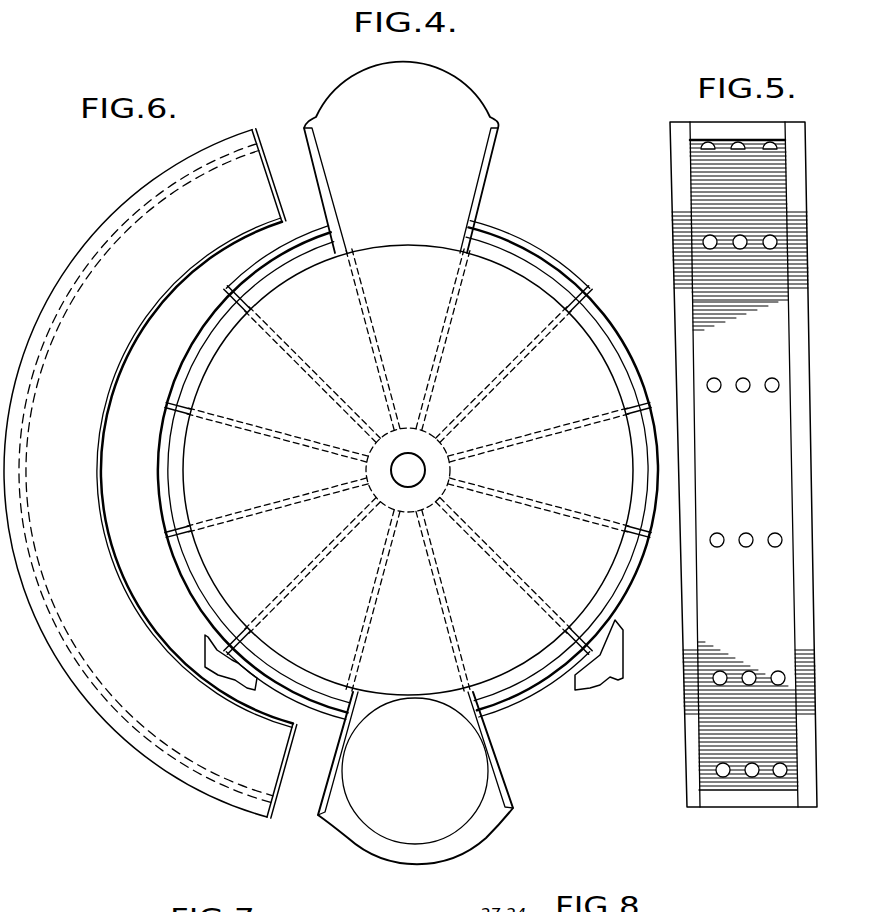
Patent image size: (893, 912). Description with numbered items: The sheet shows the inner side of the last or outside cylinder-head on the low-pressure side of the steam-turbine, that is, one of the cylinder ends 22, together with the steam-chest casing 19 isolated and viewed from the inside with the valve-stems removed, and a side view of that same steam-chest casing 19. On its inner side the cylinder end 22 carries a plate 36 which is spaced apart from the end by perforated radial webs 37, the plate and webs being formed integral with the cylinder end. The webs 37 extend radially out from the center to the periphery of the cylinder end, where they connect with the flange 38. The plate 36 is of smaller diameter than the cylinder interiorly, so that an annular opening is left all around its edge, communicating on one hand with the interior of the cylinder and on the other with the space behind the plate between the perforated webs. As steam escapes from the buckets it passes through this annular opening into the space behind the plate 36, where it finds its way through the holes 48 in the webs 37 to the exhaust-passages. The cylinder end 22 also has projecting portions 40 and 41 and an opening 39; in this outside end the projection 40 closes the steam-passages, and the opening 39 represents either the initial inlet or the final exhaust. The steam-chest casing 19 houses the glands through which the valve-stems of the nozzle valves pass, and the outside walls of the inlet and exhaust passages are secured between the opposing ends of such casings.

In FIG. 5, the steam-chest casing 19 is at (710, 333).
In FIG. 6, the steam-chest casing 19 is at (83, 298).
In FIG. 4, the cylinder end 22 is at (352, 488).
In FIG. 4, the plate 36 is at (562, 460).
In FIG. 4, the perforated radial web 37 is at (384, 443).
In FIG. 4, the flange 38 is at (416, 470).
In FIG. 4, the opening 39 is at (415, 771).
In FIG. 4, the projecting portion 40 is at (452, 120).
In FIG. 4, the projecting portion 41 is at (447, 850).
In FIG. 4, the hole 48 is at (408, 470).